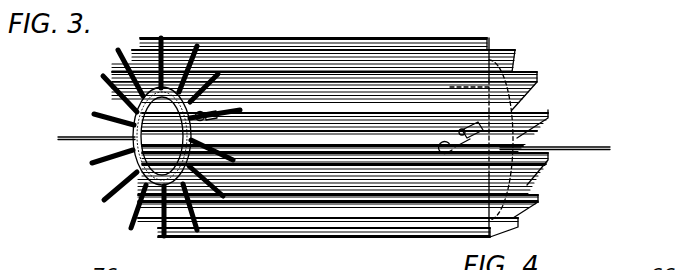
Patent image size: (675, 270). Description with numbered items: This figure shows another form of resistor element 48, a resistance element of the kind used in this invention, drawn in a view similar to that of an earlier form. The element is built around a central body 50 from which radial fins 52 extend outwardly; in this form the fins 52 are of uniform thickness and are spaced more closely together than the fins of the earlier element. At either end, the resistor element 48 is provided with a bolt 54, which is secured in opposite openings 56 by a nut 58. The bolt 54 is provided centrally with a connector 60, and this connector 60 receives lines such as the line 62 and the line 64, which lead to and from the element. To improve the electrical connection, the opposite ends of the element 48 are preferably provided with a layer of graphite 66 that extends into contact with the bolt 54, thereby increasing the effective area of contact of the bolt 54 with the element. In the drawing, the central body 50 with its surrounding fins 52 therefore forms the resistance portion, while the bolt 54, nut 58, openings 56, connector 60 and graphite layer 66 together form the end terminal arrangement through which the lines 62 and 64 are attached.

The resistor element 48 is at (546, 82).
The central body 50 is at (187, 215).
The radial fins 52 is at (507, 53).
The bolt 54 is at (124, 113).
The openings 56 is at (133, 168).
The nut 58 is at (207, 112).
The connector 60 is at (145, 195).
The line 62 is at (72, 136).
The line 64 is at (585, 146).
The layer of graphite 66 is at (133, 190).